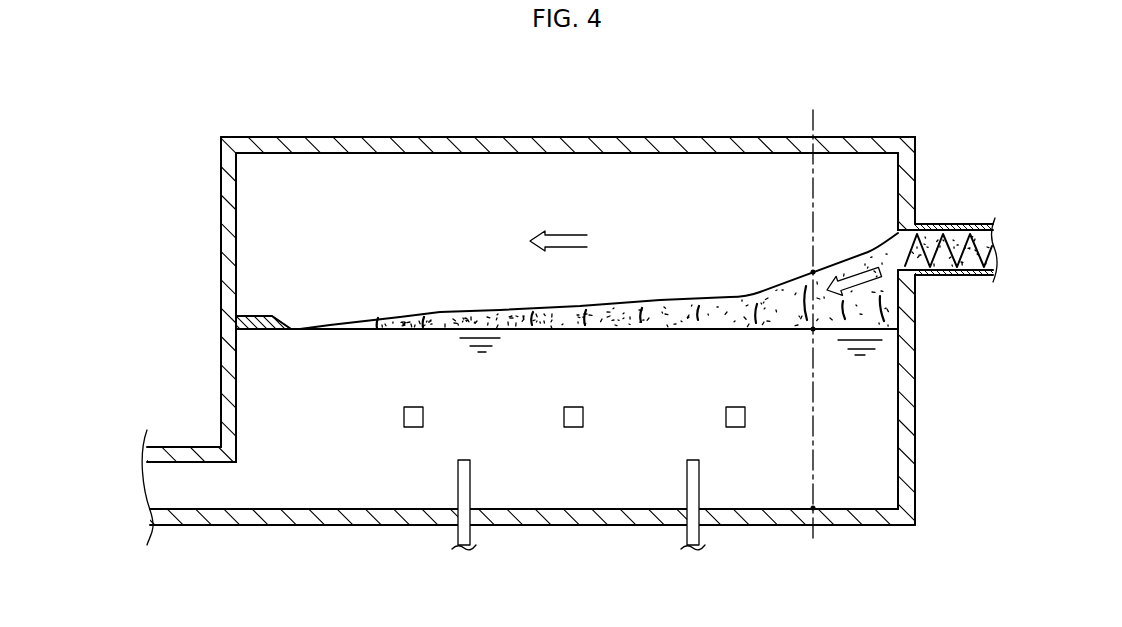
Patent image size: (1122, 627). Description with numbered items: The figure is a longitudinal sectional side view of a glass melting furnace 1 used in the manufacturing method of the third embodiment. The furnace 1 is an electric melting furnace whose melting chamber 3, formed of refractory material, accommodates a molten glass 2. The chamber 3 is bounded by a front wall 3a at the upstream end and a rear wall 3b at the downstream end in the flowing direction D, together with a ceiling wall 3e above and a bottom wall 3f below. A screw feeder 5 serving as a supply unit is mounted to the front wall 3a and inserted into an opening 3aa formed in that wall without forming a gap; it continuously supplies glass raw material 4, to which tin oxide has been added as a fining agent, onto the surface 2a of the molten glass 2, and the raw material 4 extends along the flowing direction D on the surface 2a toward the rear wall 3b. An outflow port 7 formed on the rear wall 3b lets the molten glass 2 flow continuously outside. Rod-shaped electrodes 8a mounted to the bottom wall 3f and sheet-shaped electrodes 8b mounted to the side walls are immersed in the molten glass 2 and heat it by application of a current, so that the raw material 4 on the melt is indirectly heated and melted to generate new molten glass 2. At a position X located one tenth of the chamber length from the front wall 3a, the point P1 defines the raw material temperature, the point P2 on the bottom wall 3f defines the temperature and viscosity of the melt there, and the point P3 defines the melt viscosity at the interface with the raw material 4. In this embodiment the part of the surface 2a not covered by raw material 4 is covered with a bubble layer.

The glass melting furnace 1 is at (724, 109).
The molten glass 2 is at (592, 379).
The surface of the molten glass 2a is at (606, 326).
The melting chamber 3 is at (561, 329).
The front wall 3a is at (896, 395).
The opening 3aa is at (910, 263).
The rear wall 3b is at (236, 386).
The ceiling wall 3e is at (424, 160).
The bottom wall 3f is at (582, 506).
The glass raw material 4 is at (663, 296).
The screw feeder 5 is at (970, 223).
The outflow port 7 is at (164, 463).
The rod-shaped electrodes 8a is at (461, 460).
The sheet-shaped electrodes 8b is at (414, 406).
The point P1 is at (809, 270).
The point P2 is at (812, 510).
The point P3 is at (811, 332).
The position X is at (816, 117).
The flowing direction D is at (571, 231).